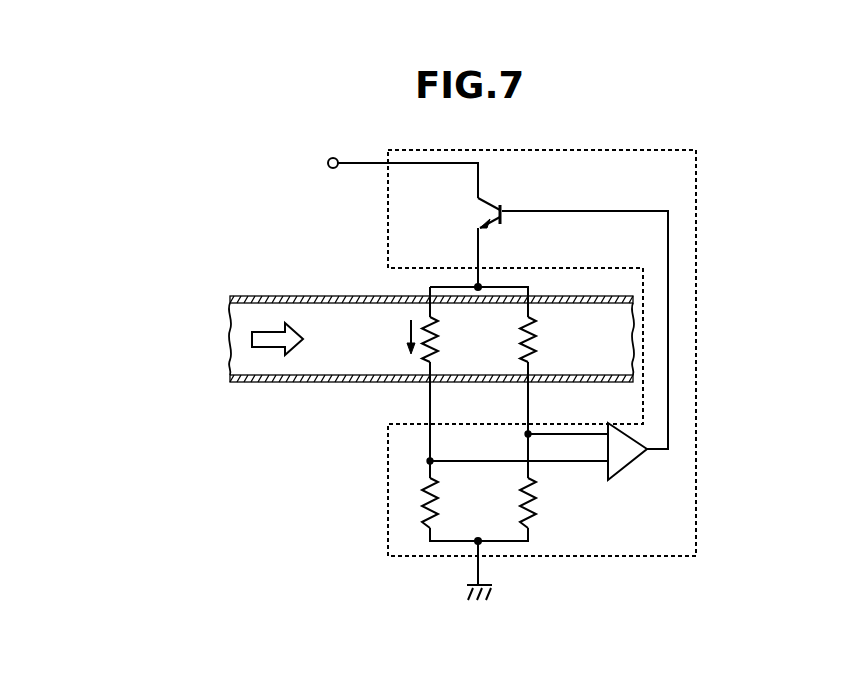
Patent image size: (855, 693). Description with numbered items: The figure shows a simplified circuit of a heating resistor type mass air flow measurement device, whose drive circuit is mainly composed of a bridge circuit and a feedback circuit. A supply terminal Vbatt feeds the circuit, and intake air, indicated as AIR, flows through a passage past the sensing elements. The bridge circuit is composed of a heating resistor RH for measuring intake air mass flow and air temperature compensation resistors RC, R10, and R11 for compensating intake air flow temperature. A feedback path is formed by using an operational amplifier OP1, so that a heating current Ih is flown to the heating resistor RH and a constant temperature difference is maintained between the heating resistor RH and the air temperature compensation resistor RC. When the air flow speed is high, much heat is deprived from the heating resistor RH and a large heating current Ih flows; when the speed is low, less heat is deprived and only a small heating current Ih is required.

The battery voltage terminal Vbatt is at (373, 175).
The air flow in intake passage AIR is at (262, 323).
The heating current Ih is at (399, 337).
The heating resistor RH is at (450, 396).
The air temperature compensation resistor RC is at (549, 396).
The air temperature compensation resistor R10 is at (456, 509).
The air temperature compensation resistor R11 is at (533, 509).
The operational amplifier OP1 is at (537, 451).